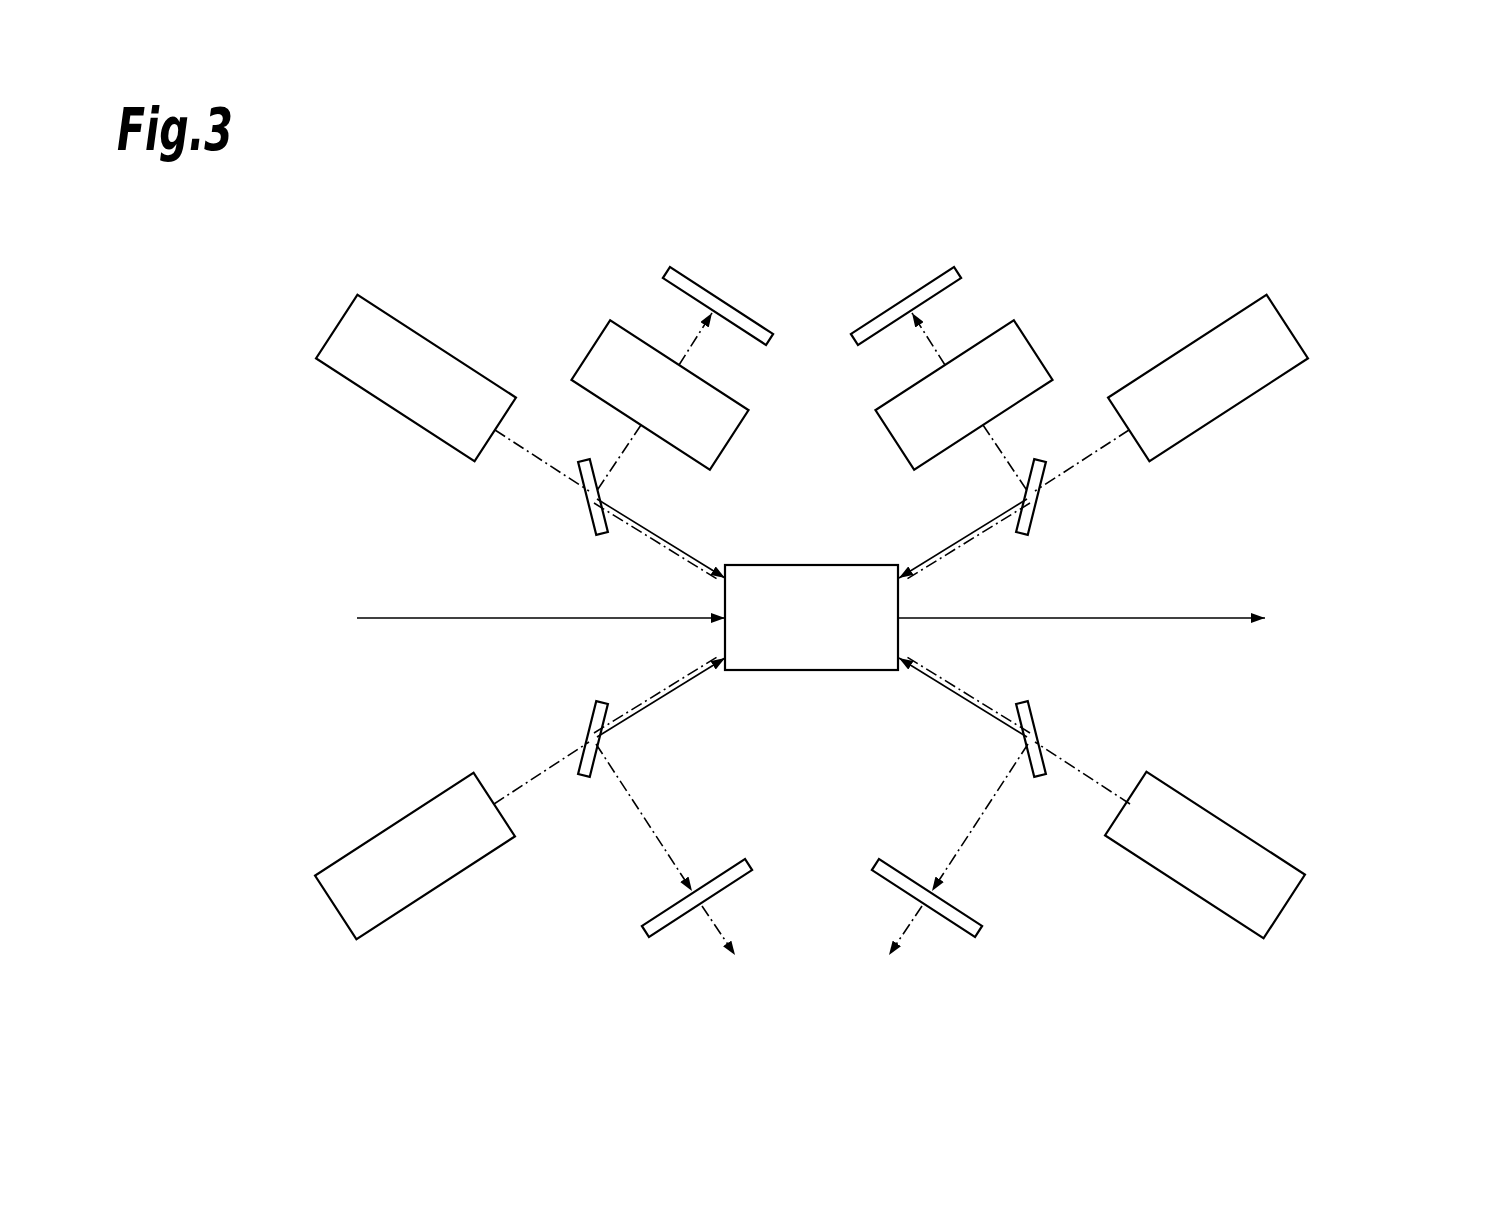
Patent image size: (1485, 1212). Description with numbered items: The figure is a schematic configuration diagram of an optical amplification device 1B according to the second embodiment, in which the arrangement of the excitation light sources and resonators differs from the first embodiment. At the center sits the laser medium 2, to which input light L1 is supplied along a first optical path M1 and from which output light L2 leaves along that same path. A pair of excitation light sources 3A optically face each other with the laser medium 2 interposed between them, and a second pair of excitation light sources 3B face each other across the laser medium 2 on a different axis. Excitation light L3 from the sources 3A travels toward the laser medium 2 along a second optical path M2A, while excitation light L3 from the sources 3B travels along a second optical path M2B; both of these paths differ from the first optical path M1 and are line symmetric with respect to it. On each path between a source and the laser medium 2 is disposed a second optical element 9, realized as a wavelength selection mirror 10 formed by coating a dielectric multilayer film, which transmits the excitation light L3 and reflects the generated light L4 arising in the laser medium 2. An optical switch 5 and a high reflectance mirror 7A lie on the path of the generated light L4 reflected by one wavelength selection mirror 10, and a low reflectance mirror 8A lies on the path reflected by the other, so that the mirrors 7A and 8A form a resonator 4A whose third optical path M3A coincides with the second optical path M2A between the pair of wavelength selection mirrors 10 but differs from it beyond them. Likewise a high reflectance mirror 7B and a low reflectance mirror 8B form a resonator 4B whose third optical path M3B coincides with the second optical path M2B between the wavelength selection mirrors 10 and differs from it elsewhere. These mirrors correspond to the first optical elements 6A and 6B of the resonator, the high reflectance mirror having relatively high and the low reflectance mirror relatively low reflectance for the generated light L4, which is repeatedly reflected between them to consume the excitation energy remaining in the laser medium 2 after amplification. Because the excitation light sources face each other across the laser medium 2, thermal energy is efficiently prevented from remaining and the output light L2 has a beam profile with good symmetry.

The optical amplification device 1B is at (285, 262).
The laser medium 2 is at (812, 563).
The excitation light source 3A is at (445, 350).
The excitation light source 3B is at (1179, 350).
The resonator 4A is at (894, 899).
The resonator 4B is at (730, 899).
The optical switch 5 is at (590, 348).
The first optical element 6A is at (812, 276).
The first optical element 6B is at (815, 938).
The high reflectance mirror 7A is at (718, 294).
The high reflectance mirror 7B is at (905, 294).
The low reflectance mirror 8A is at (922, 938).
The low reflectance mirror 8B is at (710, 938).
The second optical element 9 is at (809, 618).
The wavelength selection mirror 10 is at (596, 534).
The input light L1 is at (497, 616).
The output light L2 is at (1117, 616).
The excitation light L3 is at (811, 637).
The generated light L4 is at (808, 612).
The first optical path M1 is at (823, 624).
The second optical path M2A is at (518, 457).
The second optical path M2B is at (1106, 457).
The third optical path M3A is at (624, 462).
The third optical path M3B is at (1000, 462).